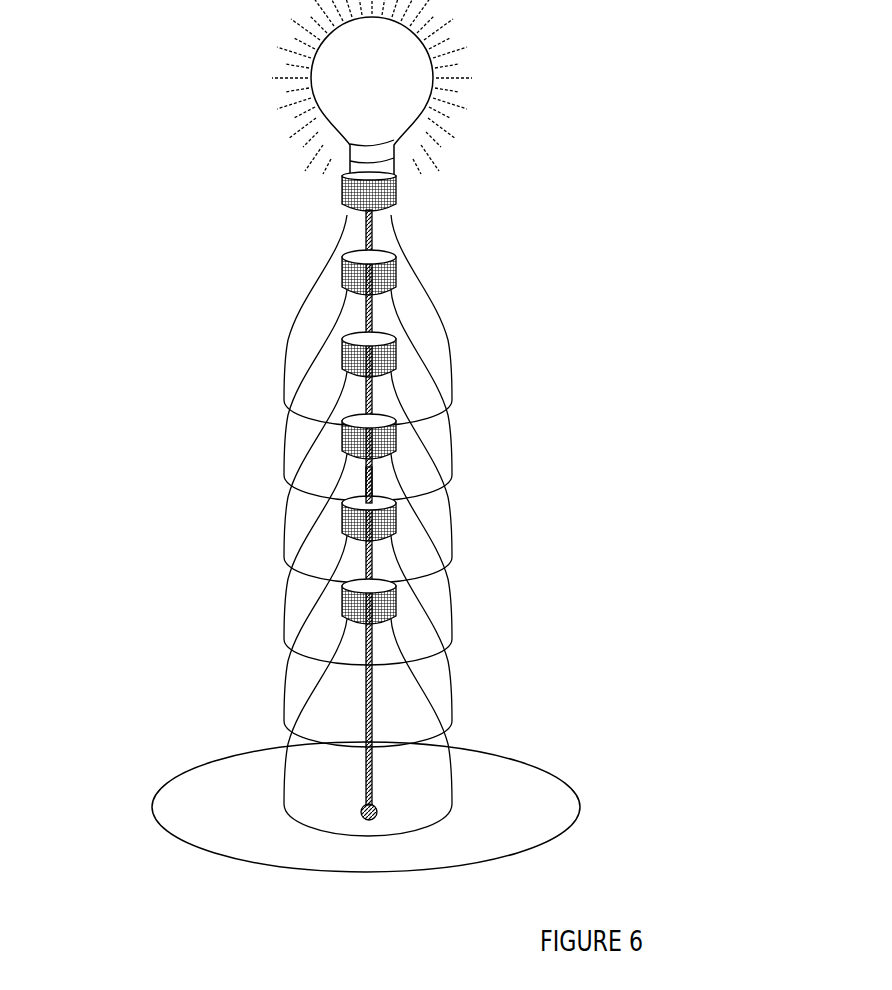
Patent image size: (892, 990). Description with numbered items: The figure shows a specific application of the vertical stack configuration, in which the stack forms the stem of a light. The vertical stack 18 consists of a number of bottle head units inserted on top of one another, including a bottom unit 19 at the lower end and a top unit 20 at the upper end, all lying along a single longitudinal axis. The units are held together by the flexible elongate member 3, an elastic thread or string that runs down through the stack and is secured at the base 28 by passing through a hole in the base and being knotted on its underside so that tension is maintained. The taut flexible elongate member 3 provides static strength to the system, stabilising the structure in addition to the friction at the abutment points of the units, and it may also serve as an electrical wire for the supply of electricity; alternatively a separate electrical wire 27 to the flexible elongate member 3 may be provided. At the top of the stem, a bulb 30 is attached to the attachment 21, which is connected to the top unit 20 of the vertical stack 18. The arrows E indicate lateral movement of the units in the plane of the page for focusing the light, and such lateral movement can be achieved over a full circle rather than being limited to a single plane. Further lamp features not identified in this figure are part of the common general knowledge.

The flexible elongate member 3 is at (355, 477).
The vertical stack 18 is at (466, 345).
The bottom unit 19 is at (459, 771).
The top unit 20 is at (404, 225).
The attachment 21 is at (335, 195).
The electrical wire 27 is at (378, 477).
The base 28 is at (584, 803).
The bulb 30 is at (442, 93).
The arrows indicating lateral movement E is at (310, 214).